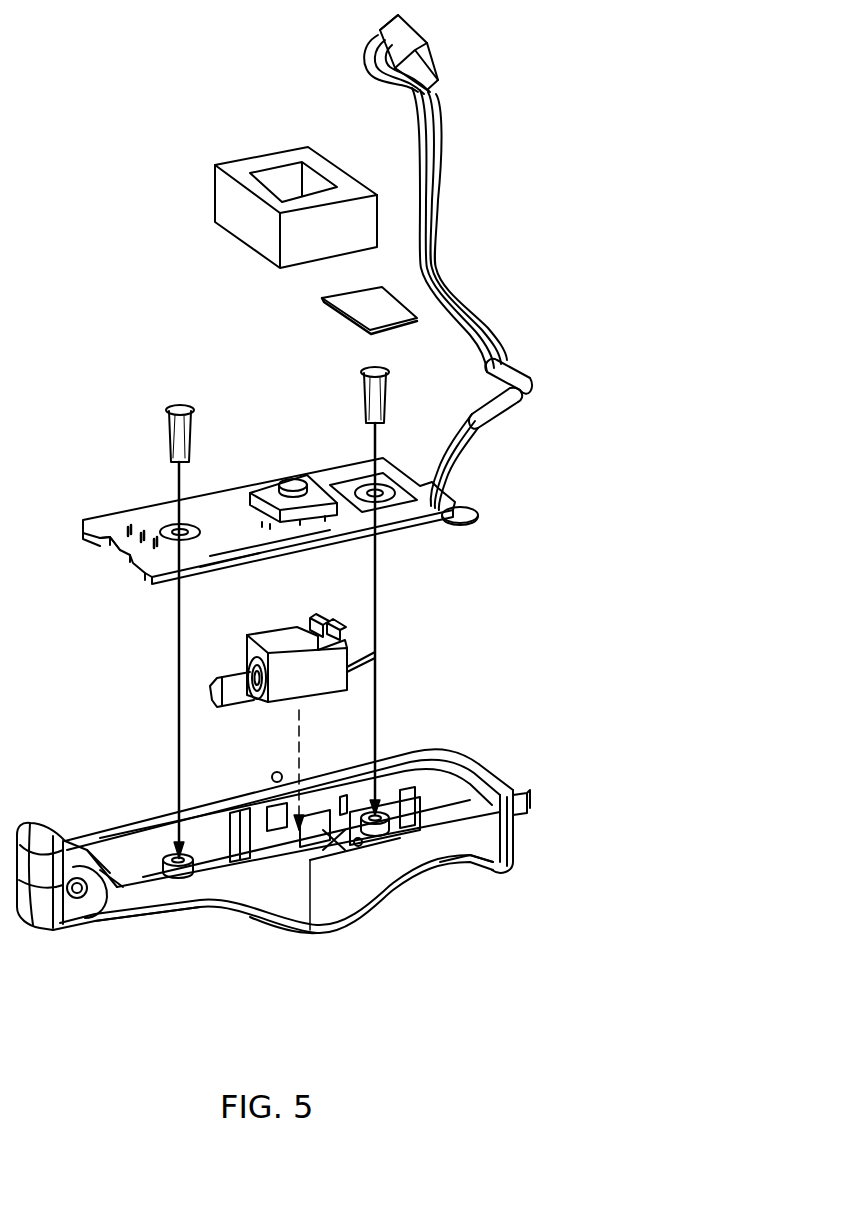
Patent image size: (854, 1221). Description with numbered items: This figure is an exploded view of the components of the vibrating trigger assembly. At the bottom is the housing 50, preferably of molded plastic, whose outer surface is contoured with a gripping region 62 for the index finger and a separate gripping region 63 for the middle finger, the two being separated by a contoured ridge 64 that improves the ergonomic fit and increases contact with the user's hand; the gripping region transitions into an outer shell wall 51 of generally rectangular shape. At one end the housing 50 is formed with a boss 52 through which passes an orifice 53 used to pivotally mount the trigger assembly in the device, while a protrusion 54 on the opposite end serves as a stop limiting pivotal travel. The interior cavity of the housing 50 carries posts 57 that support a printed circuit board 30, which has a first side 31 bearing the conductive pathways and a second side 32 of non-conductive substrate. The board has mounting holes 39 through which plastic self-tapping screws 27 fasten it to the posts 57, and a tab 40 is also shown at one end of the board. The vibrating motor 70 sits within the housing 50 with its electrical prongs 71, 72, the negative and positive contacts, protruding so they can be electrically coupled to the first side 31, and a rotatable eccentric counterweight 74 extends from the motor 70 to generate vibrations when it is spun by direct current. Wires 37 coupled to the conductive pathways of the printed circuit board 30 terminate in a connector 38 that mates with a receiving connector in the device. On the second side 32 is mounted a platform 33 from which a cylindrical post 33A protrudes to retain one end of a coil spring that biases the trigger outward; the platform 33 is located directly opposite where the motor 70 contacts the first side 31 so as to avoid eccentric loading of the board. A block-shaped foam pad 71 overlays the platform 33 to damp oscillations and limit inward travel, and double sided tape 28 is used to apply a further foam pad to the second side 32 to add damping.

The screws 27 is at (178, 404).
The double sided tape 28 is at (342, 306).
The printed circuit board 30 is at (234, 457).
The first side 31 is at (233, 581).
The second side 32 is at (237, 546).
The platform 33 is at (282, 490).
The cylindrical post 33A is at (295, 478).
The wires 37 is at (443, 204).
The connector 38 is at (430, 40).
The mounting holes 39 is at (390, 500).
The board tab 40 is at (100, 545).
The housing 50 is at (524, 745).
The outer shell wall 51 is at (338, 893).
The boss 52 is at (63, 835).
The orifice 53 is at (84, 930).
The protrusion 54 is at (531, 804).
The posts 57 is at (150, 864).
The gripping region 62 is at (446, 892).
The gripping region 63 is at (170, 952).
The contoured ridge 64 is at (292, 967).
The vibrating motor 70 is at (319, 716).
The electrical prong / block-shaped foam pad 71 is at (213, 190).
The electrical prong 72 is at (321, 615).
The eccentric counterweight 74 is at (220, 690).